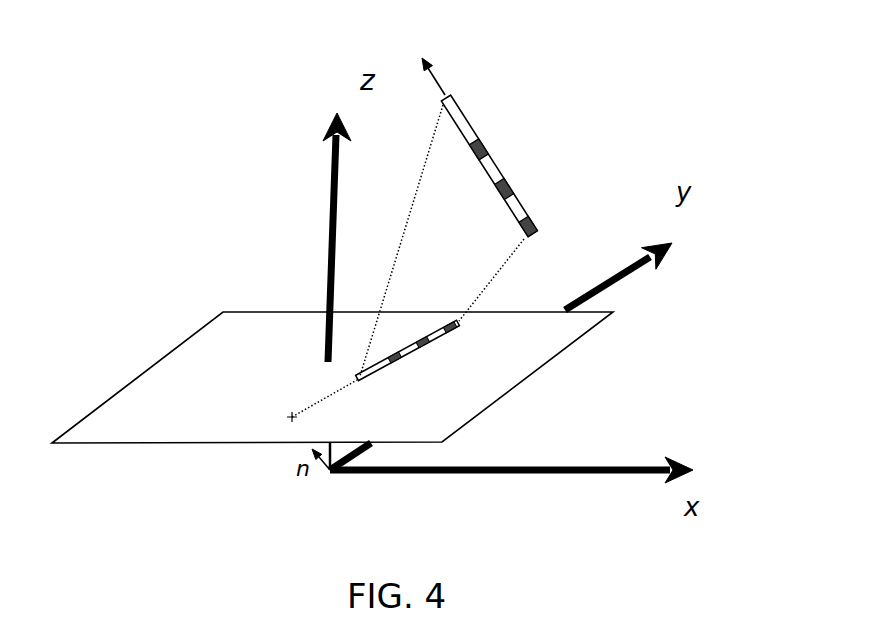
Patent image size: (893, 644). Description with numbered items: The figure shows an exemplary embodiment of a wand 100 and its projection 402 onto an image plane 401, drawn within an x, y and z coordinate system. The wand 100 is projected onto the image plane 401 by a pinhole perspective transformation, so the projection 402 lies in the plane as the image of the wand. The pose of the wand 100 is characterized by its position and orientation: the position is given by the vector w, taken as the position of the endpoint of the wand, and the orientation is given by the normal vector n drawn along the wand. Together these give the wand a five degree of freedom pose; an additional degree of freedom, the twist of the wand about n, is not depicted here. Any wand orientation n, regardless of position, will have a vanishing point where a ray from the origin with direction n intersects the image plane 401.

The wand 100 is at (477, 134).
The image plane 401 is at (580, 333).
The projection 402 is at (410, 352).